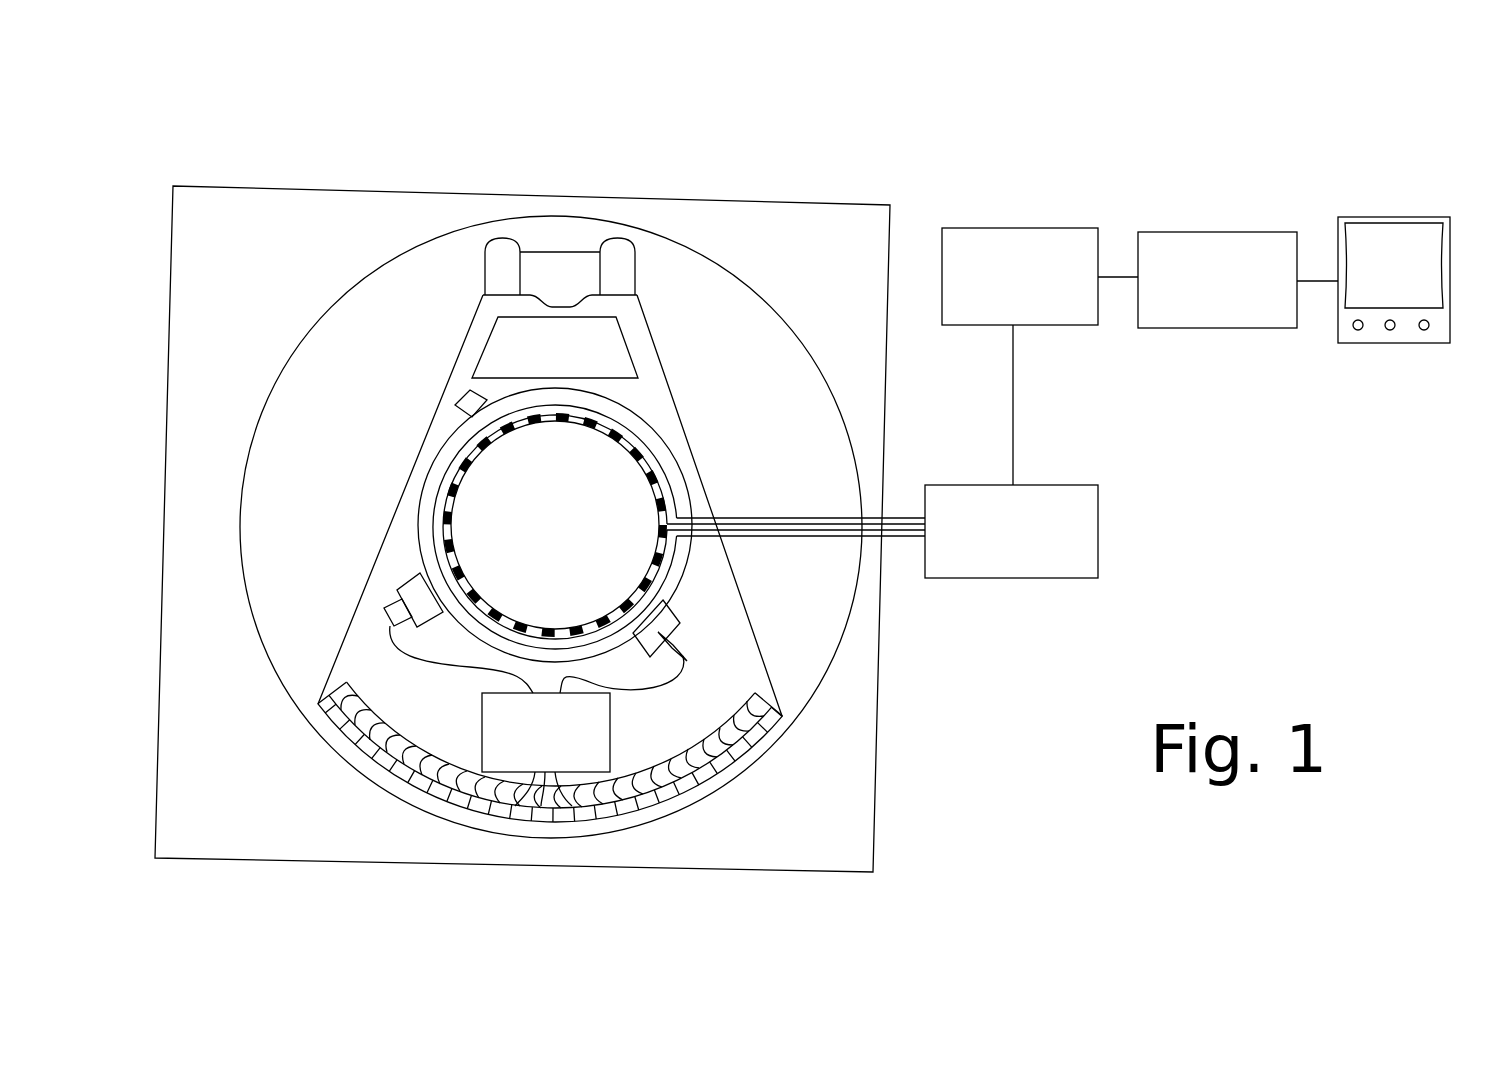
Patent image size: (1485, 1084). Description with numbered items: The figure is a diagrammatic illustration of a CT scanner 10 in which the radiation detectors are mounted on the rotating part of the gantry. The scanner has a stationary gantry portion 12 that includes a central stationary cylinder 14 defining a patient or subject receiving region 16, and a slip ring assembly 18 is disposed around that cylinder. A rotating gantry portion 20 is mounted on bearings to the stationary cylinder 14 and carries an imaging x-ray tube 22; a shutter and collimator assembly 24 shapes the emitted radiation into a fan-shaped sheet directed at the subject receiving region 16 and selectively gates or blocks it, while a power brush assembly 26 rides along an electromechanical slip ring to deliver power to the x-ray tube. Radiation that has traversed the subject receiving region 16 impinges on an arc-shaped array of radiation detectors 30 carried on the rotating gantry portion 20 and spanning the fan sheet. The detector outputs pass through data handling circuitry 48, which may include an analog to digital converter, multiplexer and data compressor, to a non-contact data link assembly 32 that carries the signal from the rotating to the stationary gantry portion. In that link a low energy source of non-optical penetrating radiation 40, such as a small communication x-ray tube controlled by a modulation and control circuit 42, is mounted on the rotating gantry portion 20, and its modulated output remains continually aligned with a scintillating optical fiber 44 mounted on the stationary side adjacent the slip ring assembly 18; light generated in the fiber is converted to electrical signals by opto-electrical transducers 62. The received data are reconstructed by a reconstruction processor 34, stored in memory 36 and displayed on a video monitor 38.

The CT scanner 10 is at (566, 186).
The stationary gantry portion 12 is at (270, 186).
The central stationary cylinder 14 is at (460, 478).
The patient or subject receiving region 16 is at (538, 540).
The slip ring assembly 18 is at (437, 470).
The rotating gantry portion 20 is at (672, 410).
The imaging x-ray tube 22 is at (548, 291).
The shutter and collimator assembly 24 is at (546, 359).
The power brush assembly 26 is at (470, 400).
The radiation detectors 30 is at (622, 808).
The non-contact data link assembly 32 is at (702, 492).
The reconstruction processor 34 is at (1020, 228).
The memory 36 is at (1220, 232).
The video monitor 38 is at (1390, 217).
The low energy source of non-optical penetrating radiation 40 is at (417, 598).
The modulation and control circuit 42 is at (390, 612).
The scintillating optical fiber 44 is at (443, 570).
The data handling circuitry 48 is at (482, 735).
The opto-electrical transducers 62 is at (1098, 528).